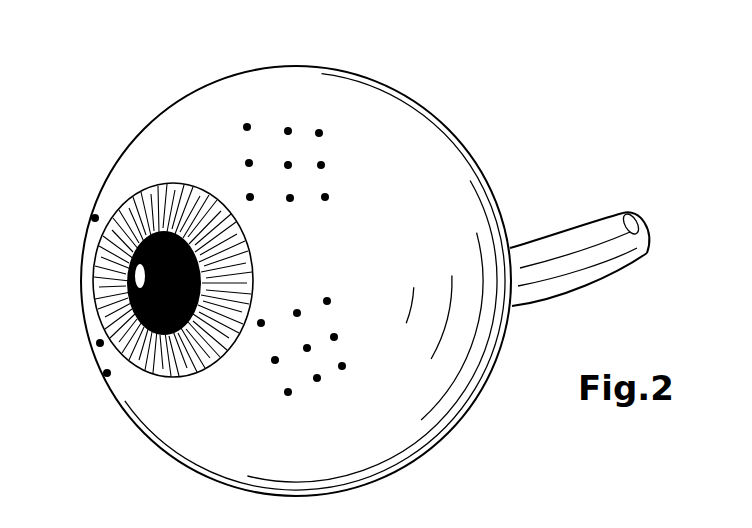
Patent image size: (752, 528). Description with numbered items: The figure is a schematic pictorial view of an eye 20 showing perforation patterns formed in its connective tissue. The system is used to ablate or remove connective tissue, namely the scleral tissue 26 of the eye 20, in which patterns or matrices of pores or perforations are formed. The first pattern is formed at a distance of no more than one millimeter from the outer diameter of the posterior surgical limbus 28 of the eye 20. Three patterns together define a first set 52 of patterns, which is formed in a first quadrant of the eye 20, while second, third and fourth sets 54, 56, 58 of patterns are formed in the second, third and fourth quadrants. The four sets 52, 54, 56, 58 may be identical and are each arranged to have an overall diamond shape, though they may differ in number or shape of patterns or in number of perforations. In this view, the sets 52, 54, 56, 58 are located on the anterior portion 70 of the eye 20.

The eye 20 is at (512, 126).
The scleral tissue 26 is at (188, 127).
The posterior surgical limbus 28 is at (212, 365).
The first set of patterns 52 is at (332, 205).
The second set of patterns 54 is at (330, 402).
The third set of patterns 56 is at (90, 360).
The fourth set of patterns 58 is at (82, 218).
The anterior portion 70 is at (237, 107).